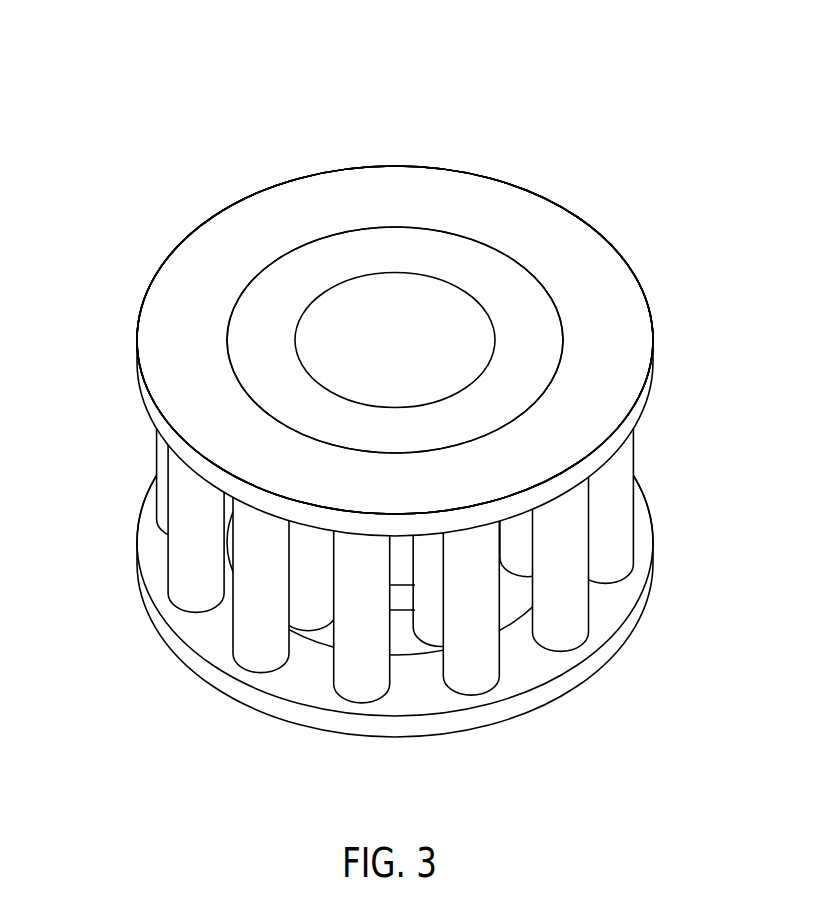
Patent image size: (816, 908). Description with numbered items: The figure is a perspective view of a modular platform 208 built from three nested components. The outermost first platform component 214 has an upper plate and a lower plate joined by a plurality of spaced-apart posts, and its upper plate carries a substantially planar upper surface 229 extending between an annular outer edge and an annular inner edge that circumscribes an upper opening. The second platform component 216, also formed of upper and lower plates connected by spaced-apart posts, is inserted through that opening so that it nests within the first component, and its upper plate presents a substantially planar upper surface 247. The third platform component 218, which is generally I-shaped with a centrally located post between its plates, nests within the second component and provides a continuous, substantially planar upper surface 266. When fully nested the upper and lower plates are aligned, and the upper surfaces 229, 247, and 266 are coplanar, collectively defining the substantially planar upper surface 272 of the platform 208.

The platform 208 is at (397, 373).
The first platform component 214 is at (193, 267).
The second platform component 216 is at (285, 295).
The third platform component 218 is at (362, 323).
The upper surface 266 is at (402, 328).
The upper surface 247 is at (442, 257).
The upper surface 229 is at (492, 203).
The upper surface 272 is at (617, 325).